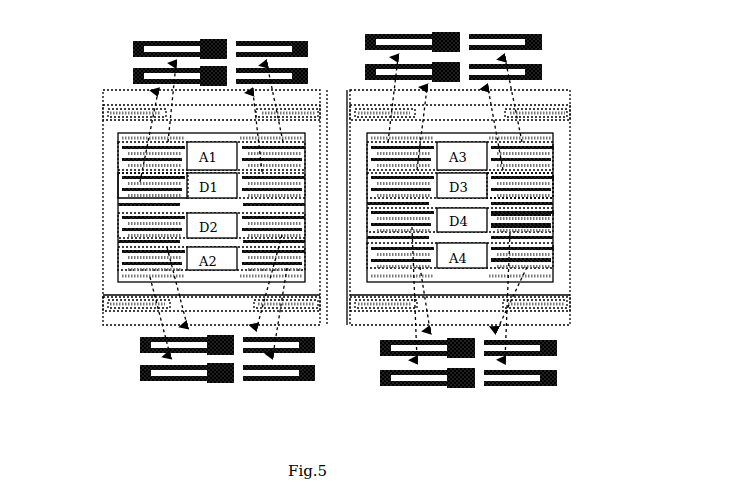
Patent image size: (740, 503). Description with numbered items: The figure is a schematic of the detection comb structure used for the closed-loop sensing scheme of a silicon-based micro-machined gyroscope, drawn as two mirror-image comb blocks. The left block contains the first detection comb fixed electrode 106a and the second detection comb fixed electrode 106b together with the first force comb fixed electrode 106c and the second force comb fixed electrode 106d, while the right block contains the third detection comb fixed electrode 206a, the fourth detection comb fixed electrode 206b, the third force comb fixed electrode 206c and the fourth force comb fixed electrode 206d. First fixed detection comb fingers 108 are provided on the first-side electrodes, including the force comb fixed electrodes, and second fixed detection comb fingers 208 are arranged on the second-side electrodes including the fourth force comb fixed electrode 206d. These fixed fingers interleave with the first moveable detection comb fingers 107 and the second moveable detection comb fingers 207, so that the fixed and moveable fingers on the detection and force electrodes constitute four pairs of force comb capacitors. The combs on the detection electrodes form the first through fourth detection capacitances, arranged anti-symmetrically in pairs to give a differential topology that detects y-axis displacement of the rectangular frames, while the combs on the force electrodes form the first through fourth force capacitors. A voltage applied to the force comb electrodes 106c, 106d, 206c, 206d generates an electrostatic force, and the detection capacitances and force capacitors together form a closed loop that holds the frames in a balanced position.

The first detection comb fixed electrode 106a is at (130, 177).
The second detection comb fixed electrode 106b is at (126, 236).
The first force comb fixed electrode 106c is at (124, 149).
The second force comb fixed electrode 106d is at (126, 264).
The first moveable detection comb fingers 107 is at (188, 188).
The first fixed detection comb fingers 108 is at (180, 204).
The third detection comb fixed electrode 206a is at (474, 189).
The fourth detection comb fixed electrode 206b is at (553, 234).
The third force comb fixed electrode 206c is at (470, 154).
The fourth force comb fixed electrode 206d is at (553, 265).
The second moveable detection comb fingers 207 is at (543, 203).
The second fixed detection comb fingers 208 is at (553, 214).